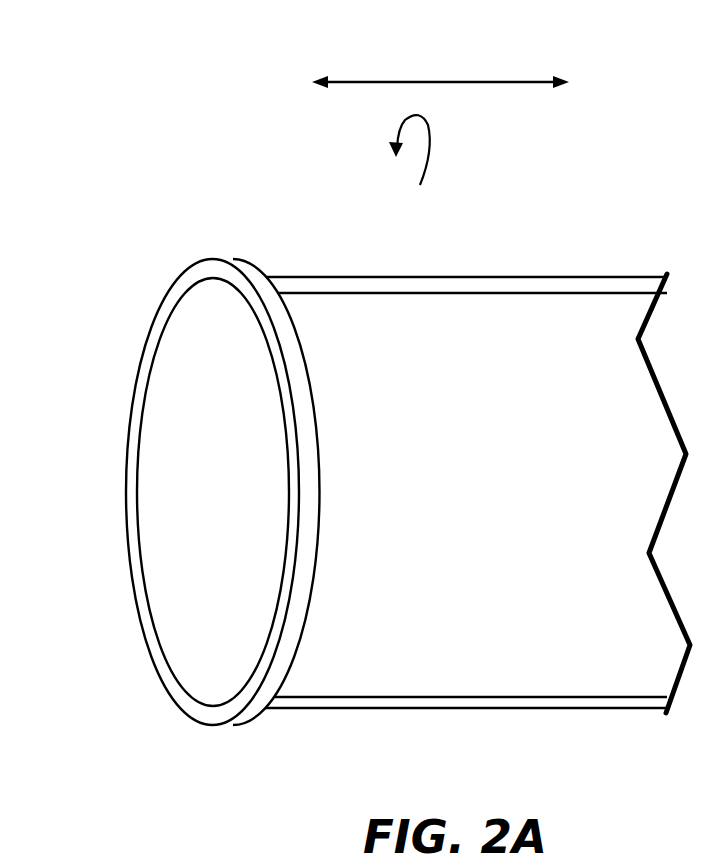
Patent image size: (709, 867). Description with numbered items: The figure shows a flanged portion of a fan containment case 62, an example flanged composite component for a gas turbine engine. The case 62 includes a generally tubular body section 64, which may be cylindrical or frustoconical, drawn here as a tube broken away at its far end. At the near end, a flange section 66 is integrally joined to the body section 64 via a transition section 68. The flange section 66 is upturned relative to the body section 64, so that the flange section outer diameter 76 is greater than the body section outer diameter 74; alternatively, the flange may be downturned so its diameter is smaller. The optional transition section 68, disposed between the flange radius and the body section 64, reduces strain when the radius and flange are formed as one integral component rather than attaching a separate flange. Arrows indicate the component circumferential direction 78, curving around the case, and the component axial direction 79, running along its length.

The fan containment case 62 is at (663, 216).
The body section 64 is at (467, 250).
The flange section 66 is at (159, 263).
The transition section 68 is at (277, 271).
The body section outer diameter 74 is at (492, 708).
The flange section outer diameter 76 is at (232, 725).
The component circumferential direction 78 is at (433, 147).
The component axial direction 79 is at (417, 81).